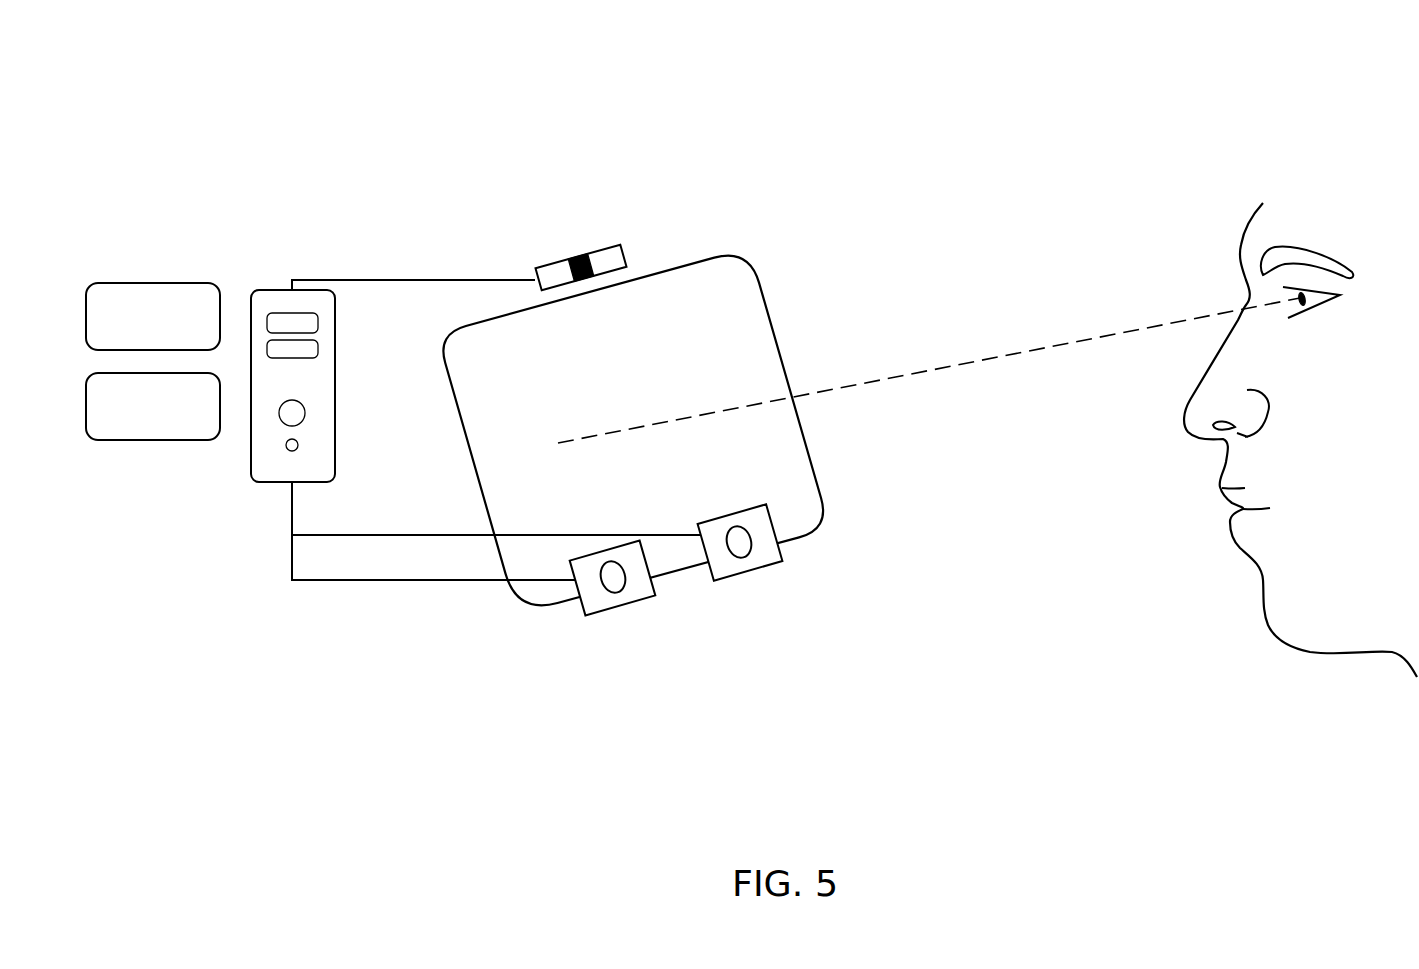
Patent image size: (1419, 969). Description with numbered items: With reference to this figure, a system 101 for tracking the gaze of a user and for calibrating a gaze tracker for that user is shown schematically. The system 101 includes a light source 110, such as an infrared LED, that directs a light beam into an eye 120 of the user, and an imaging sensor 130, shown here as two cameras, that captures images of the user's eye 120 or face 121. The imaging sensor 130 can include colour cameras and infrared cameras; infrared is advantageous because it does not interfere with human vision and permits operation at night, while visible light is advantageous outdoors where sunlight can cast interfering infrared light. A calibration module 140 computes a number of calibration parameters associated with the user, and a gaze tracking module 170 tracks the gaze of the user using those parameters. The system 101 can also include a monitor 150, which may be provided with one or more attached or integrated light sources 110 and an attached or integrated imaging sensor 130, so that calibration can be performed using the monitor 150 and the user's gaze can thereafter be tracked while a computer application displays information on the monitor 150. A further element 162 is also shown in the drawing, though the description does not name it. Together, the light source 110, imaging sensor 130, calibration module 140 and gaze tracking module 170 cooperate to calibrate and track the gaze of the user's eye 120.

The system 101 is at (200, 85).
The sensor 110 is at (603, 246).
The eye 120 is at (1312, 297).
The face of user 121 is at (1218, 488).
The camera 130 is at (597, 600).
The processor 140 is at (153, 316).
The head-mounted display 150 is at (717, 289).
The gaze direction 162 is at (992, 360).
The memory 170 is at (153, 406).